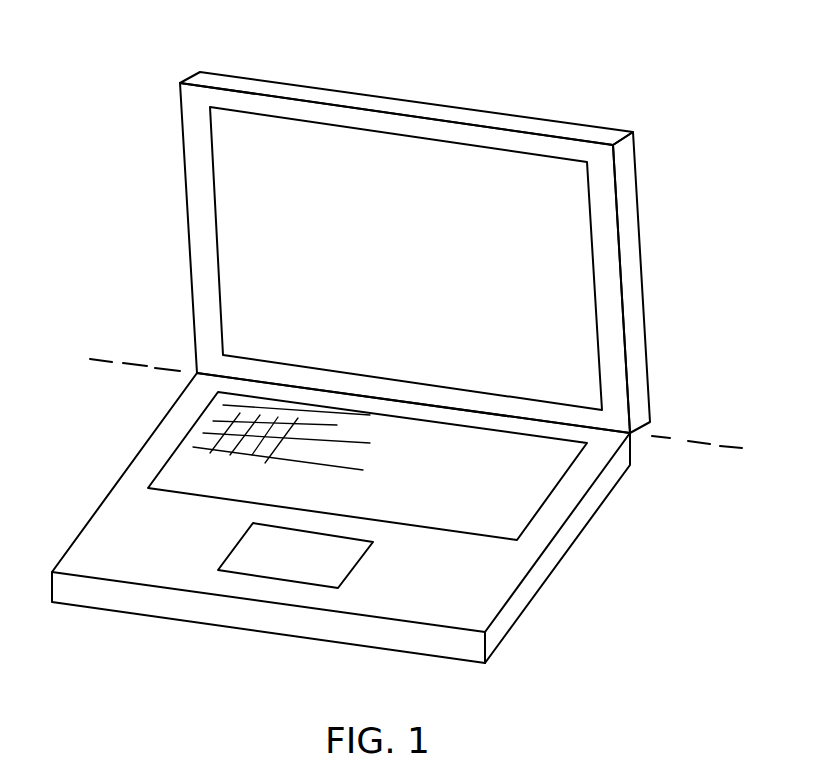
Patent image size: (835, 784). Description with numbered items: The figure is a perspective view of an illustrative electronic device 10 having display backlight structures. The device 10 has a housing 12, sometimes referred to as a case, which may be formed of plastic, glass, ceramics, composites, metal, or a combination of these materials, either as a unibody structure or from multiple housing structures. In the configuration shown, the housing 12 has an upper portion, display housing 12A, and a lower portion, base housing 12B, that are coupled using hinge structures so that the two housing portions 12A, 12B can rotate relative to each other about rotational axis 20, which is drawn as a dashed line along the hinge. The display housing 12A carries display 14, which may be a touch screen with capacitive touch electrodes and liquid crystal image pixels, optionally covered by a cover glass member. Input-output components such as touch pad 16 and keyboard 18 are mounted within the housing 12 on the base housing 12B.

The electronic device 10 is at (616, 59).
The housing 12 is at (637, 350).
The display housing 12A is at (152, 82).
The base housing 12B is at (183, 370).
The display 14 is at (572, 223).
The touch pad 16 is at (363, 555).
The keyboard 18 is at (428, 530).
The rotational axis 20 is at (100, 358).